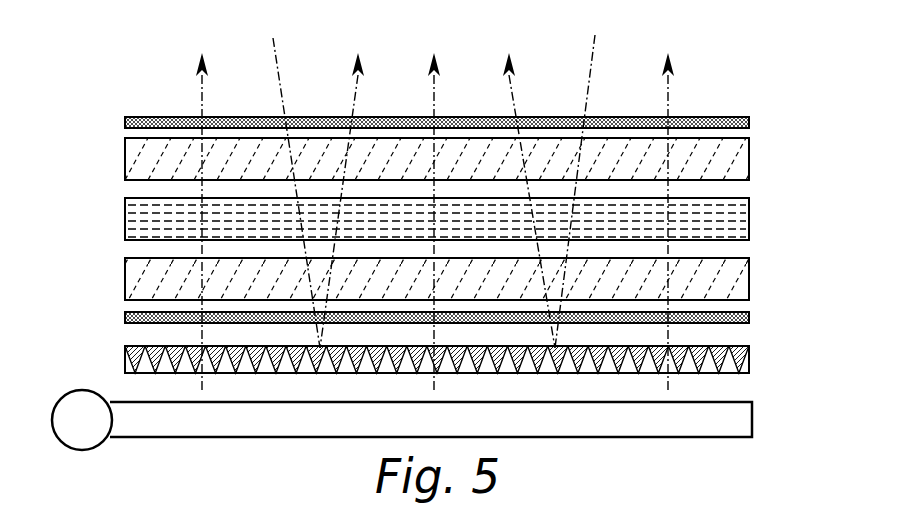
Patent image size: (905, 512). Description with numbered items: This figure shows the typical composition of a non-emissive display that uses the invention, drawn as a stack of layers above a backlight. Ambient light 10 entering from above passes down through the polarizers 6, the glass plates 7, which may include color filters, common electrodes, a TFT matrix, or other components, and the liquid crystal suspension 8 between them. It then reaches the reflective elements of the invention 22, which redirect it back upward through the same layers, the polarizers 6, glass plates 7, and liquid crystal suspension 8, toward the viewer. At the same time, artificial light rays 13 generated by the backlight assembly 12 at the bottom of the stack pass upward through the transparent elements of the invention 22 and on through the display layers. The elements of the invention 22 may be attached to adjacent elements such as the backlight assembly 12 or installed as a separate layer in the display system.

The polarizers 6 is at (123, 122).
The glass plates 7 is at (123, 176).
The liquid crystal suspension 8 is at (123, 222).
The reflective and transparent elements of the invention 22 is at (123, 352).
The backlight assembly 12 is at (158, 437).
The ambient light 10 is at (590, 73).
The artificial light rays 13 is at (668, 90).